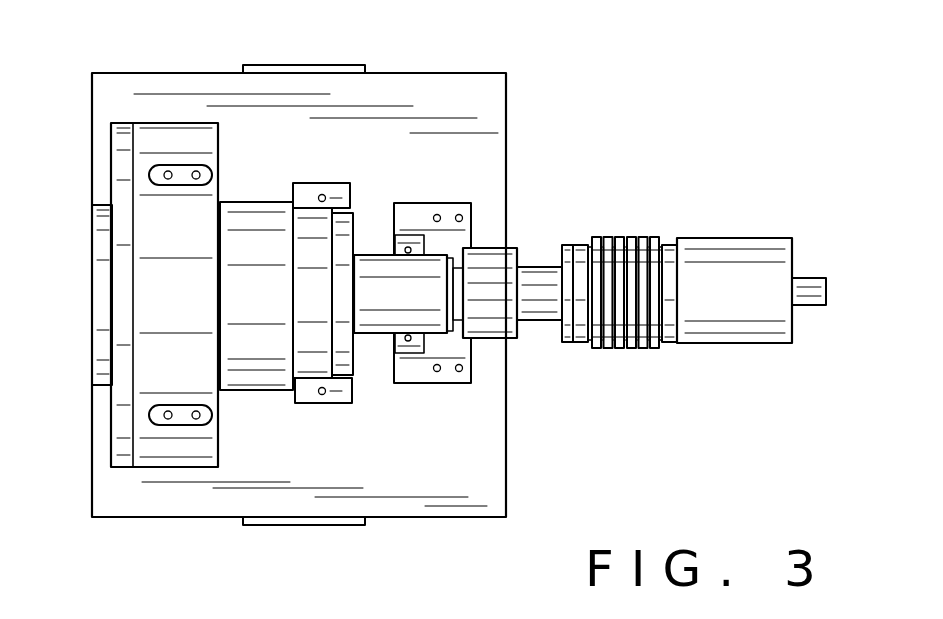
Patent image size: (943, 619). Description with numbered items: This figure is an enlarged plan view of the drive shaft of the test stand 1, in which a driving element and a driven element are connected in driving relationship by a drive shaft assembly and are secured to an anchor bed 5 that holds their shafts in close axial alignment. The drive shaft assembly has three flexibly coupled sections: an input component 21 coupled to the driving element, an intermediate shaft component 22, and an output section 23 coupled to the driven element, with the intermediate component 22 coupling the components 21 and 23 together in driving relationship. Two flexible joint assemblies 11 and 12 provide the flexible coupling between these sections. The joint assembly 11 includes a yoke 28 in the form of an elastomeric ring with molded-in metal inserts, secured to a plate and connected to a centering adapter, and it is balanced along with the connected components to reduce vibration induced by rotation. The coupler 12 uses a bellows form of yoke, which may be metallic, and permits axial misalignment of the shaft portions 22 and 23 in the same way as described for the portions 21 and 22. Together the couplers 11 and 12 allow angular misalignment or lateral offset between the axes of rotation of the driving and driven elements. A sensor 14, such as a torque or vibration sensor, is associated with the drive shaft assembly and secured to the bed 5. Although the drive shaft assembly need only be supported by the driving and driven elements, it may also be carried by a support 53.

The test stand 1 is at (375, 155).
The anchor bed 5 is at (120, 78).
The flexible joint assembly 11 is at (197, 120).
The flexible joint assembly 12 is at (622, 230).
The sensor 14 is at (316, 190).
The input component 21 is at (103, 193).
The intermediate shaft component 22 is at (368, 255).
The output section 23 is at (718, 238).
The yoke 28 is at (155, 138).
The support 53 is at (432, 385).